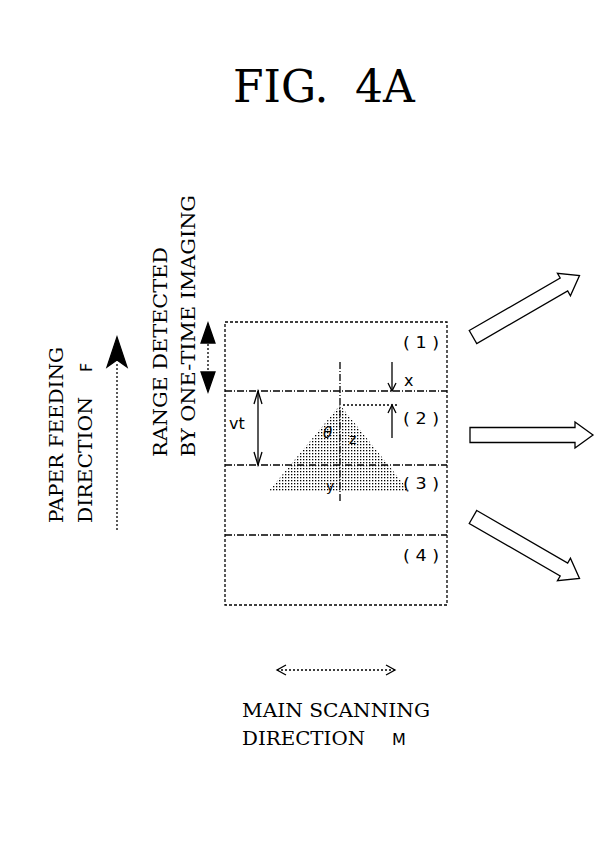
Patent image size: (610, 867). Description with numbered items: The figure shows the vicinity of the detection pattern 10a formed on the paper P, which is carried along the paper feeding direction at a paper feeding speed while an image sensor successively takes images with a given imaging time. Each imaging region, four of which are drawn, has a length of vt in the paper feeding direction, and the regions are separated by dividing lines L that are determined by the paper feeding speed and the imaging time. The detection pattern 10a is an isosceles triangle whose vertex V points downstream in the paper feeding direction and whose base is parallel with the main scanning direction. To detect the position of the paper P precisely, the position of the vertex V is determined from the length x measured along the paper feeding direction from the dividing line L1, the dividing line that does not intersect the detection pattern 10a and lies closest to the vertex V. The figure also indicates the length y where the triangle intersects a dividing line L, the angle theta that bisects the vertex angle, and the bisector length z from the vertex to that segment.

The paper P is at (225, 582).
The dividing line L1 is at (287, 391).
The dividing lines L is at (400, 465).
The vertex V is at (341, 403).
The detection pattern 10a is at (278, 478).